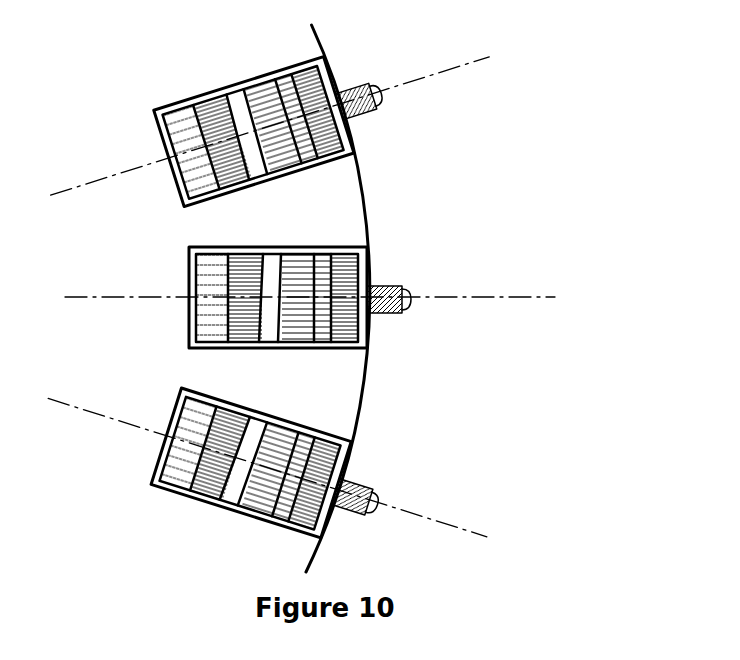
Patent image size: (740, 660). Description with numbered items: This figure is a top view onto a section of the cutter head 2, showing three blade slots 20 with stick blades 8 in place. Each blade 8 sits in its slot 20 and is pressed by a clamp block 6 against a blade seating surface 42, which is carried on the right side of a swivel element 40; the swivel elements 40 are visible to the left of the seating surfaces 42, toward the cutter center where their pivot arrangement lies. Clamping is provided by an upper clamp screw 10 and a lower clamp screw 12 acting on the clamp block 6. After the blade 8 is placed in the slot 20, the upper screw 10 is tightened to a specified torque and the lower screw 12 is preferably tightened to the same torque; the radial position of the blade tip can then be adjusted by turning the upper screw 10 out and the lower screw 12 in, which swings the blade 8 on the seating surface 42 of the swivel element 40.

The cutter head 2 is at (315, 209).
The clamp block 6 is at (368, 263).
The stick blade 8 is at (250, 303).
The upper clamp screw 10 is at (484, 325).
The lower clamp screw 12 is at (387, 314).
The blade slot 20 is at (333, 329).
The swivel element 40 is at (210, 272).
The blade seating surface 42 is at (187, 143).